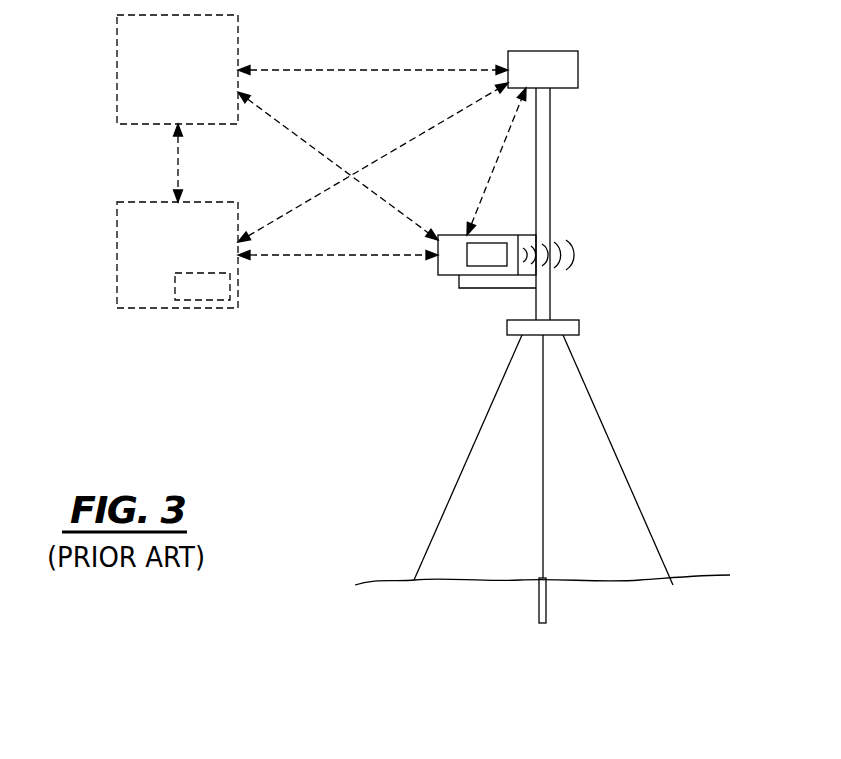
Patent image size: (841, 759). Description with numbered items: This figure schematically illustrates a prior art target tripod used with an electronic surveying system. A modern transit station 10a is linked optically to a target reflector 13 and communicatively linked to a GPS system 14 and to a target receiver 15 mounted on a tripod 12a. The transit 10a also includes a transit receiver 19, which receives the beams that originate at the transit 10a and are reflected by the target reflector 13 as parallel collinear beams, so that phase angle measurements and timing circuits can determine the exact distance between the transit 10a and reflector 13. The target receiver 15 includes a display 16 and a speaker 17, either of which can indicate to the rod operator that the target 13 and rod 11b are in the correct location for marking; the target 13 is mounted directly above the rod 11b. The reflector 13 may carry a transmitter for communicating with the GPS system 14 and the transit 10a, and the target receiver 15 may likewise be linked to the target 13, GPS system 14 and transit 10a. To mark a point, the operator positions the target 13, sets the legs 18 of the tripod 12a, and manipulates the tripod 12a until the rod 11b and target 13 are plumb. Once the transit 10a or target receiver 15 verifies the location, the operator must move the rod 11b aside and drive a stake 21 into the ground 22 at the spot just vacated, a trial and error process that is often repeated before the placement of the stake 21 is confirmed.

The transit station 10a is at (158, 310).
The rod 11b is at (543, 478).
The tripod 12a is at (641, 242).
The target reflector 13 is at (547, 51).
The GPS system 14 is at (117, 95).
The target receiver 15 is at (445, 280).
The display 16 is at (486, 243).
The speaker 17 is at (523, 245).
The legs 18 is at (487, 412).
The transit receiver 19 is at (232, 287).
The stake 21 is at (538, 600).
The ground 22 is at (377, 583).